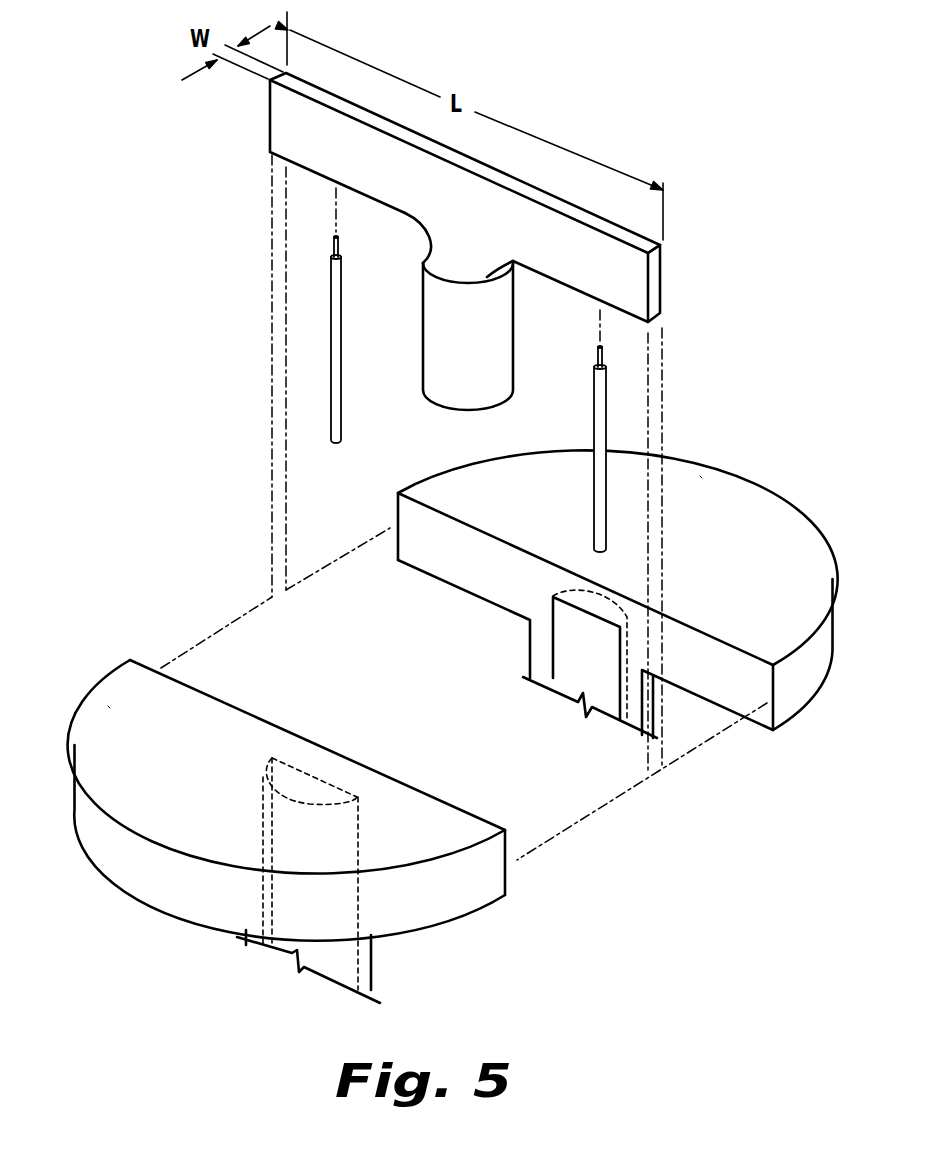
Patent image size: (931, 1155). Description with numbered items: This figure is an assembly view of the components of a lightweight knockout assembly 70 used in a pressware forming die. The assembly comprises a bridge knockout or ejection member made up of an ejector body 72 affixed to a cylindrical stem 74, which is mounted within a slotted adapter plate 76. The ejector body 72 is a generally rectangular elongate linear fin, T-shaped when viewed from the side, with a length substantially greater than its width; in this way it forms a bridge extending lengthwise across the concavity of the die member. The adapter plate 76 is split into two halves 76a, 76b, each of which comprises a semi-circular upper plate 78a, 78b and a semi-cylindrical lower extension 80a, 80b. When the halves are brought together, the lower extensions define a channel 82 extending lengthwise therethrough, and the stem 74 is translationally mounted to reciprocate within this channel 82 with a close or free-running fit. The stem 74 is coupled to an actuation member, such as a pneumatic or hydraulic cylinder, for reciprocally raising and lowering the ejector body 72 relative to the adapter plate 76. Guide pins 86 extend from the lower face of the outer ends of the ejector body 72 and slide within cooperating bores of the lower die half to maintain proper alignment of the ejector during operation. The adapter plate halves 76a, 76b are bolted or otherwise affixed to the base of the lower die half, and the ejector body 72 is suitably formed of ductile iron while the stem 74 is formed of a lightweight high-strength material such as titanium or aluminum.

The knockout assembly 70 is at (111, 322).
The ejector body 72 is at (618, 270).
The cylindrical stem 74 is at (442, 316).
The adapter plate 76 is at (683, 957).
The adapter plate half 76a is at (275, 797).
The adapter plate half 76b is at (622, 598).
The semi-circular upper plate 78a is at (105, 705).
The semi-circular upper plate 78b is at (696, 482).
The semi-cylindrical lower extension 80a is at (287, 942).
The semi-cylindrical lower extension 80b is at (653, 700).
The channel 82 is at (567, 675).
The guide pins 86 is at (335, 405).